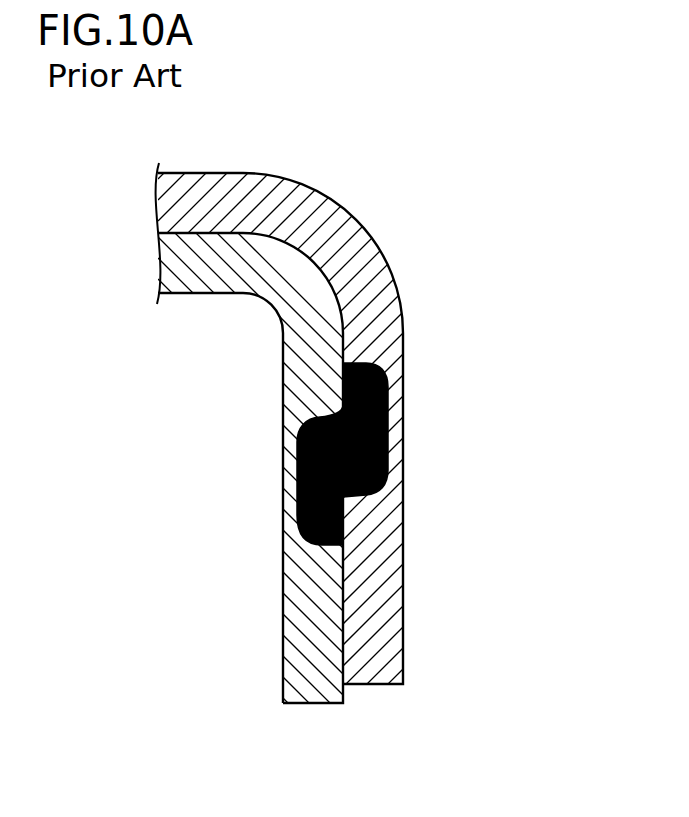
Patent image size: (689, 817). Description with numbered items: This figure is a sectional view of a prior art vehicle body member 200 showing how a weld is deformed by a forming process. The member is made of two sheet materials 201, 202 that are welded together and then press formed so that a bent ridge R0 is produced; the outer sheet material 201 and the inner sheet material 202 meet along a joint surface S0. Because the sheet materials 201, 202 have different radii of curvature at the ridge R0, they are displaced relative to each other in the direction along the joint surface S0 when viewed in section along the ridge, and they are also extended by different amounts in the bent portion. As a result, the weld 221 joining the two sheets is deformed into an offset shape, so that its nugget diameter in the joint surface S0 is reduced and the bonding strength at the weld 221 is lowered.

The vehicle body member 200 is at (515, 194).
The sheet material 201 is at (330, 428).
The sheet material 202 is at (264, 463).
The weld 221 is at (402, 407).
The ridge R0 is at (353, 215).
The joint surface S0 is at (342, 665).